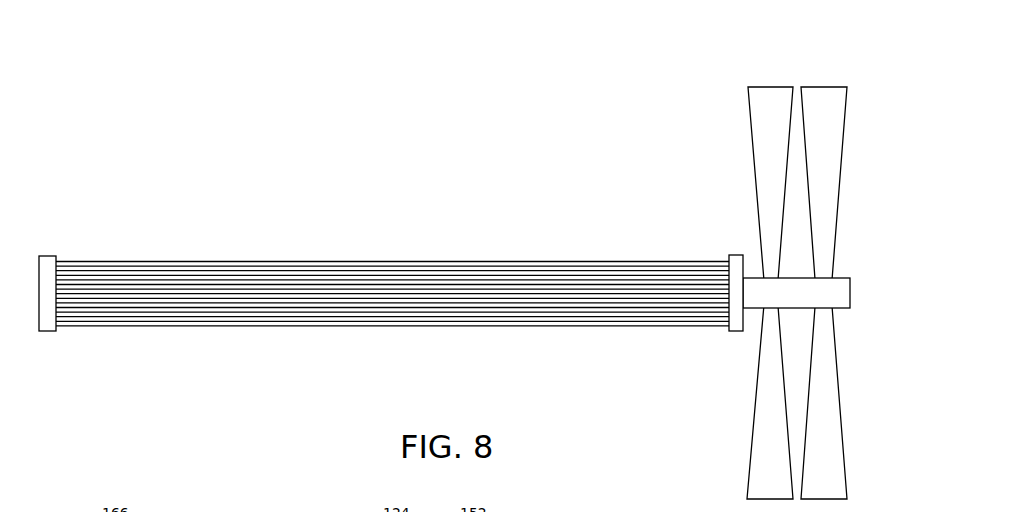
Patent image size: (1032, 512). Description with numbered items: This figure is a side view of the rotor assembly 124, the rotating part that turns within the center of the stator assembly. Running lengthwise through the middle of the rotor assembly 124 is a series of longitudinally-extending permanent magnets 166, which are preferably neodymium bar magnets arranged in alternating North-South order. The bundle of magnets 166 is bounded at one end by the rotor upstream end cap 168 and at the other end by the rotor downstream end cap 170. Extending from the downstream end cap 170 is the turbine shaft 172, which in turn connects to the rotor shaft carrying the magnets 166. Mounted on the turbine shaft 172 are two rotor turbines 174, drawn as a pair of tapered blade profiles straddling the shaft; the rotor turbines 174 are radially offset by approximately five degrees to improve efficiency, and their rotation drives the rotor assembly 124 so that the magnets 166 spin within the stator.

The rotor assembly 124 is at (430, 185).
The permanent magnets 166 is at (263, 272).
The rotor upstream end cap 168 is at (48, 278).
The rotor downstream end cap 170 is at (744, 256).
The turbine shaft 172 is at (850, 306).
The rotor turbines 174 is at (828, 87).